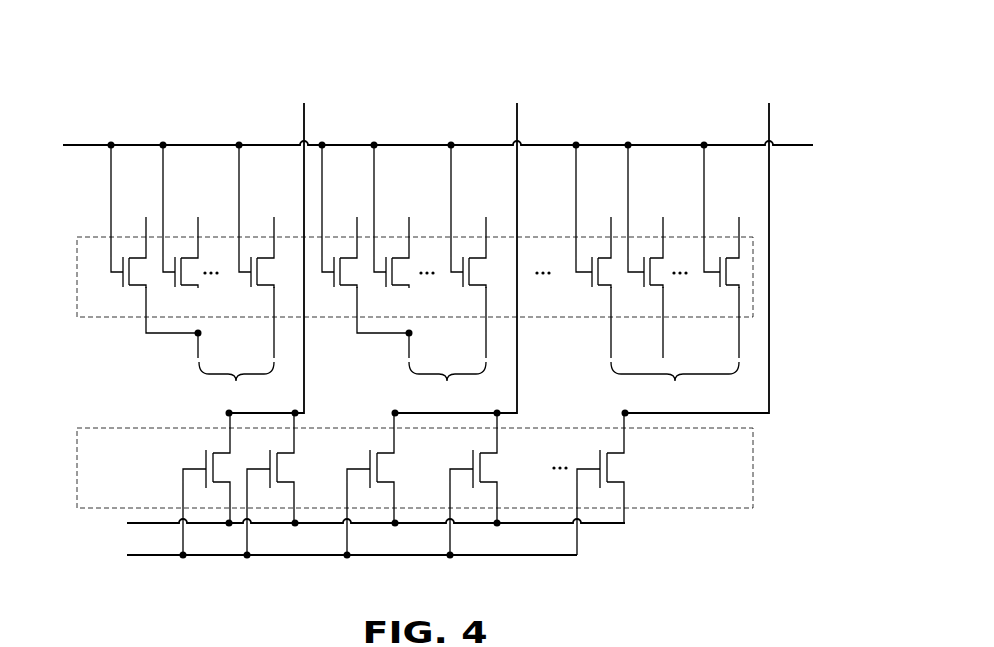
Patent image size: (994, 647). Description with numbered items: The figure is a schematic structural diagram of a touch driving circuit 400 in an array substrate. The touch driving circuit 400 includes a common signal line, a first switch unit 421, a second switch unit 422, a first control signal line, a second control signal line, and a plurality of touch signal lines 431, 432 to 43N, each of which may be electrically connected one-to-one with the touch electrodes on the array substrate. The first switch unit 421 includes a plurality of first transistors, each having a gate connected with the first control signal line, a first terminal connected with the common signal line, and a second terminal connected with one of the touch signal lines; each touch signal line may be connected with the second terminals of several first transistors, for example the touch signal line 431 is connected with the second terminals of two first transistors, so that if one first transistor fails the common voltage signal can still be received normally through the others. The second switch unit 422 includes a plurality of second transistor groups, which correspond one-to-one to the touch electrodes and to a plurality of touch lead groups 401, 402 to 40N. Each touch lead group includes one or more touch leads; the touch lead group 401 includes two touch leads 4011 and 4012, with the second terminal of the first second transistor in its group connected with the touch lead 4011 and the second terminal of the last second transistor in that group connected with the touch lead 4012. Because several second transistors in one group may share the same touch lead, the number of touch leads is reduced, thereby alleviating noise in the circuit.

The touch driving circuit 400 is at (765, 25).
The touch signal line 431 is at (305, 125).
The touch signal line 432 is at (518, 125).
The touch signal line 43N is at (770, 125).
The second switch unit 422 is at (754, 278).
The first switch unit 421 is at (754, 470).
The touch lead group 401 is at (236, 383).
The touch lead group 402 is at (421, 345).
The touch lead group 40N is at (675, 345).
The touch lead 4011 is at (199, 357).
The touch lead 4012 is at (273, 333).